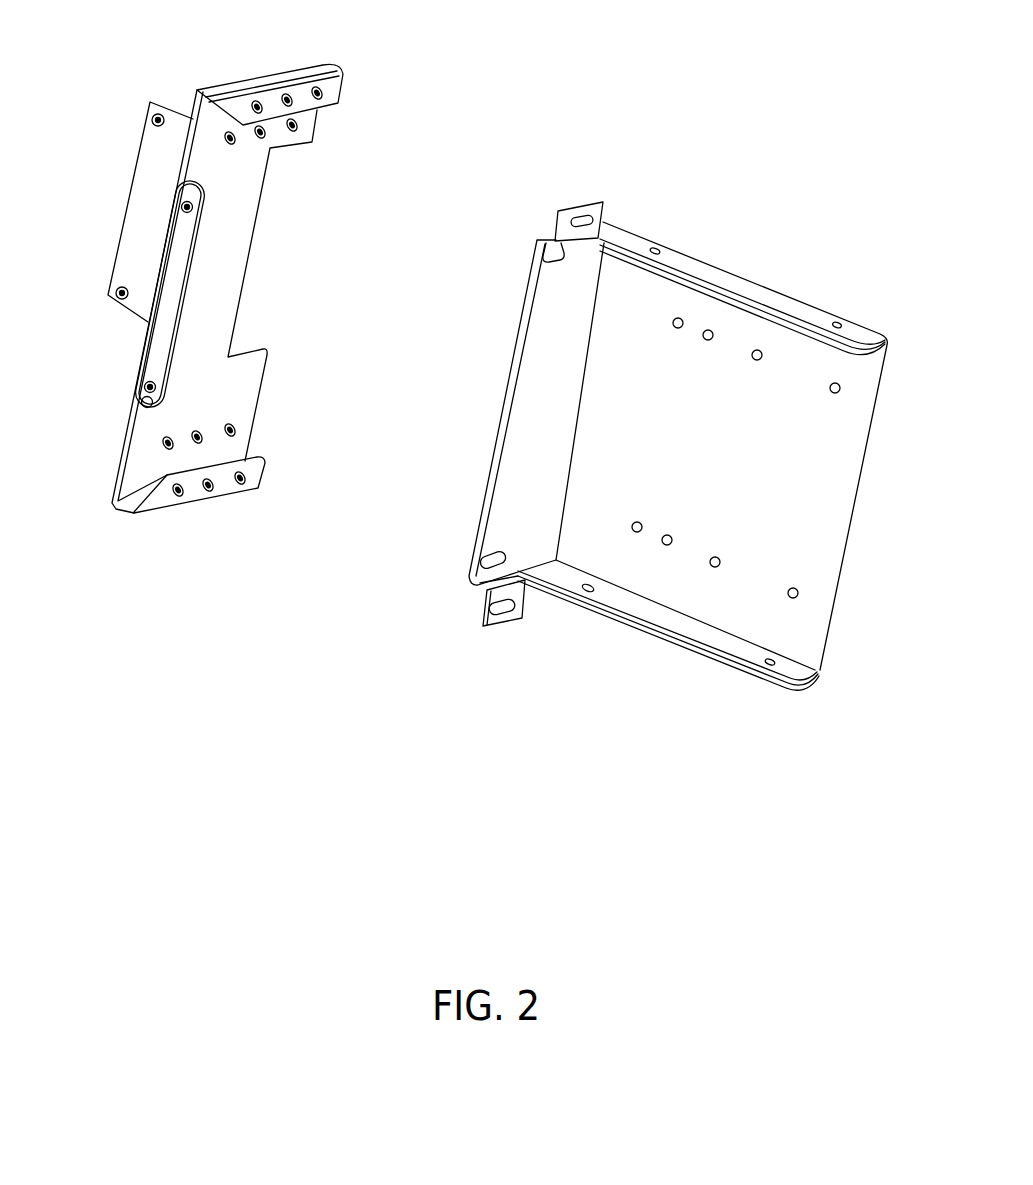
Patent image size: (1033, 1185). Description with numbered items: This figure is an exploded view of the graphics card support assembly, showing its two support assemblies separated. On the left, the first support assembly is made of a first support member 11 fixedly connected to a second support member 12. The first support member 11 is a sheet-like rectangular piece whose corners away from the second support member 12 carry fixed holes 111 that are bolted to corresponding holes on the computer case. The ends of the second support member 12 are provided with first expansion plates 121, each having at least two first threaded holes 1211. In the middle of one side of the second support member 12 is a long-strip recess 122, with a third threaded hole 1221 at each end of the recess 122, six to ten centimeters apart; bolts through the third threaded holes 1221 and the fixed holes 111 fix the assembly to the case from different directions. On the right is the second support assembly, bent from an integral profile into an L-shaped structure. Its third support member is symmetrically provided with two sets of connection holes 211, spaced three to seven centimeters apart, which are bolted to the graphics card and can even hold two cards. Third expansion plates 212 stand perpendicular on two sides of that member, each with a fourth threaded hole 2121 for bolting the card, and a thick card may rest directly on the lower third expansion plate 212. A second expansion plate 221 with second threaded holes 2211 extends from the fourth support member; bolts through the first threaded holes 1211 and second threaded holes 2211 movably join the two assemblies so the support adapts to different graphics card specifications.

The first support member 11 is at (170, 143).
The fixed hole 111 is at (115, 294).
The second support member 12 is at (207, 145).
The first expansion plate 121 is at (327, 69).
The first threaded hole 1211 is at (287, 100).
The recess 122 is at (167, 292).
The third threaded hole 1221 is at (192, 207).
The connection hole 211 is at (678, 328).
The third expansion plate 212 is at (788, 669).
The fourth threaded hole 2121 is at (837, 322).
The second expansion plate 221 is at (575, 212).
The second threaded hole 2211 is at (568, 220).